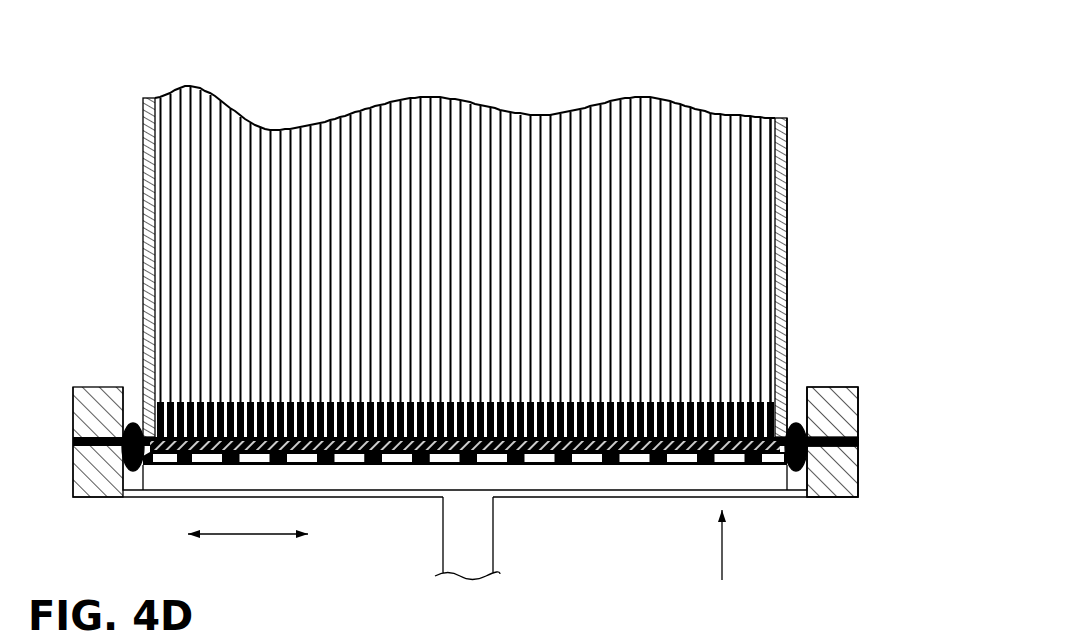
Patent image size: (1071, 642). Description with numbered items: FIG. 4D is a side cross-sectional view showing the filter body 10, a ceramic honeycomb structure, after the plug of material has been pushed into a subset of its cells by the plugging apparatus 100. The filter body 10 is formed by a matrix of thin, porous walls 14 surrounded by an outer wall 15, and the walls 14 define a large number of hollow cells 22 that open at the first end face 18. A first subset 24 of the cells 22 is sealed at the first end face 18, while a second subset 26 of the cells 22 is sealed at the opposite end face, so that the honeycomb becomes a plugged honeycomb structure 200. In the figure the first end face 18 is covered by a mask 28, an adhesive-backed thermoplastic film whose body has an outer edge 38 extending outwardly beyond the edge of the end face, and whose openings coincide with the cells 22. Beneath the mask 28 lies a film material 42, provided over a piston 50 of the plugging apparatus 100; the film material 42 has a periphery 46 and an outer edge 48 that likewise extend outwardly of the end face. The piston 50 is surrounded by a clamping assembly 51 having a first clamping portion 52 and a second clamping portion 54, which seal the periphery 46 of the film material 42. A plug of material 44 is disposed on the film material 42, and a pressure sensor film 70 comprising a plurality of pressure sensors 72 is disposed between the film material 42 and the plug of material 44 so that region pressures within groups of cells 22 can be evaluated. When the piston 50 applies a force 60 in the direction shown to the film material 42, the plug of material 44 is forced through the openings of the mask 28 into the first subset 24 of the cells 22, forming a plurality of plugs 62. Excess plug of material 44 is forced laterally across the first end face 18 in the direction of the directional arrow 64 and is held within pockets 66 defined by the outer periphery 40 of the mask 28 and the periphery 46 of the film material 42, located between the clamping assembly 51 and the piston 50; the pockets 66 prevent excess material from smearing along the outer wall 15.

The plugging apparatus 100 is at (808, 42).
The filter body 10 is at (782, 106).
The walls 14 is at (765, 207).
The outer wall 15 is at (787, 165).
The cells 22 is at (748, 238).
The first subset of cells 24 is at (765, 344).
The second subset of cells 26 is at (748, 335).
The plugged honeycomb structure 200 is at (388, 140).
The plugs 62 is at (190, 405).
The pockets 66 is at (133, 430).
The first end face 18 is at (795, 428).
The outer edge of the mask body 38 is at (831, 440).
The clamping assembly 51 is at (866, 382).
The second clamping portion 54 is at (852, 412).
The first clamping portion 52 is at (853, 472).
The outer periphery of the mask 40 is at (858, 437).
The outer edge of the film material 48 is at (858, 445).
The periphery of the film material 46 is at (852, 447).
The mask 28 is at (530, 466).
The film material 42 is at (590, 466).
The plug of material 44 is at (637, 466).
The pressure sensor film 70 is at (348, 456).
The pressure sensors 72 is at (420, 456).
The piston 50 is at (687, 478).
The directional arrow 64 is at (242, 535).
The force 60 is at (724, 545).